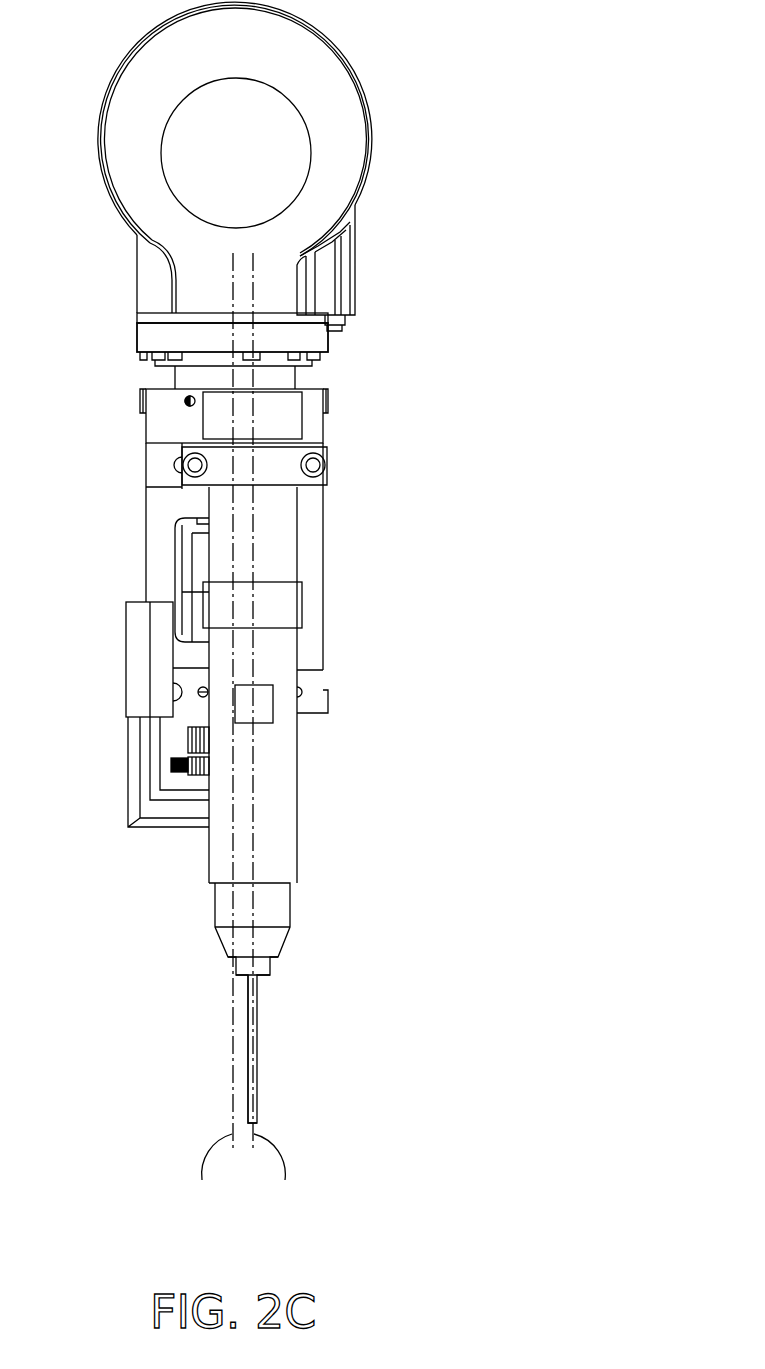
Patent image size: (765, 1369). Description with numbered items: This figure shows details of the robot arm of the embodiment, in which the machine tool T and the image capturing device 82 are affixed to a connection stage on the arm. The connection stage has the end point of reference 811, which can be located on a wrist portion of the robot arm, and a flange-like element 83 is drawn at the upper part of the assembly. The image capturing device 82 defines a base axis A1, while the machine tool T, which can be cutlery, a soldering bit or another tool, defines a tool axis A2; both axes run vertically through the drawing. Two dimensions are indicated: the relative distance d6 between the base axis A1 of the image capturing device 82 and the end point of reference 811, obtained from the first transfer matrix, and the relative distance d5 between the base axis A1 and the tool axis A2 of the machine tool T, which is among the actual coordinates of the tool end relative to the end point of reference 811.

The flange plate 83 is at (150, 337).
The end point of reference 811 is at (235, 389).
The image capturing device 82 is at (188, 742).
The machine tool T is at (287, 798).
The relative distance d5 is at (205, 270).
The relative distance d6 is at (267, 296).
The base axis A1 is at (207, 1174).
The tool axis A2 is at (279, 1174).